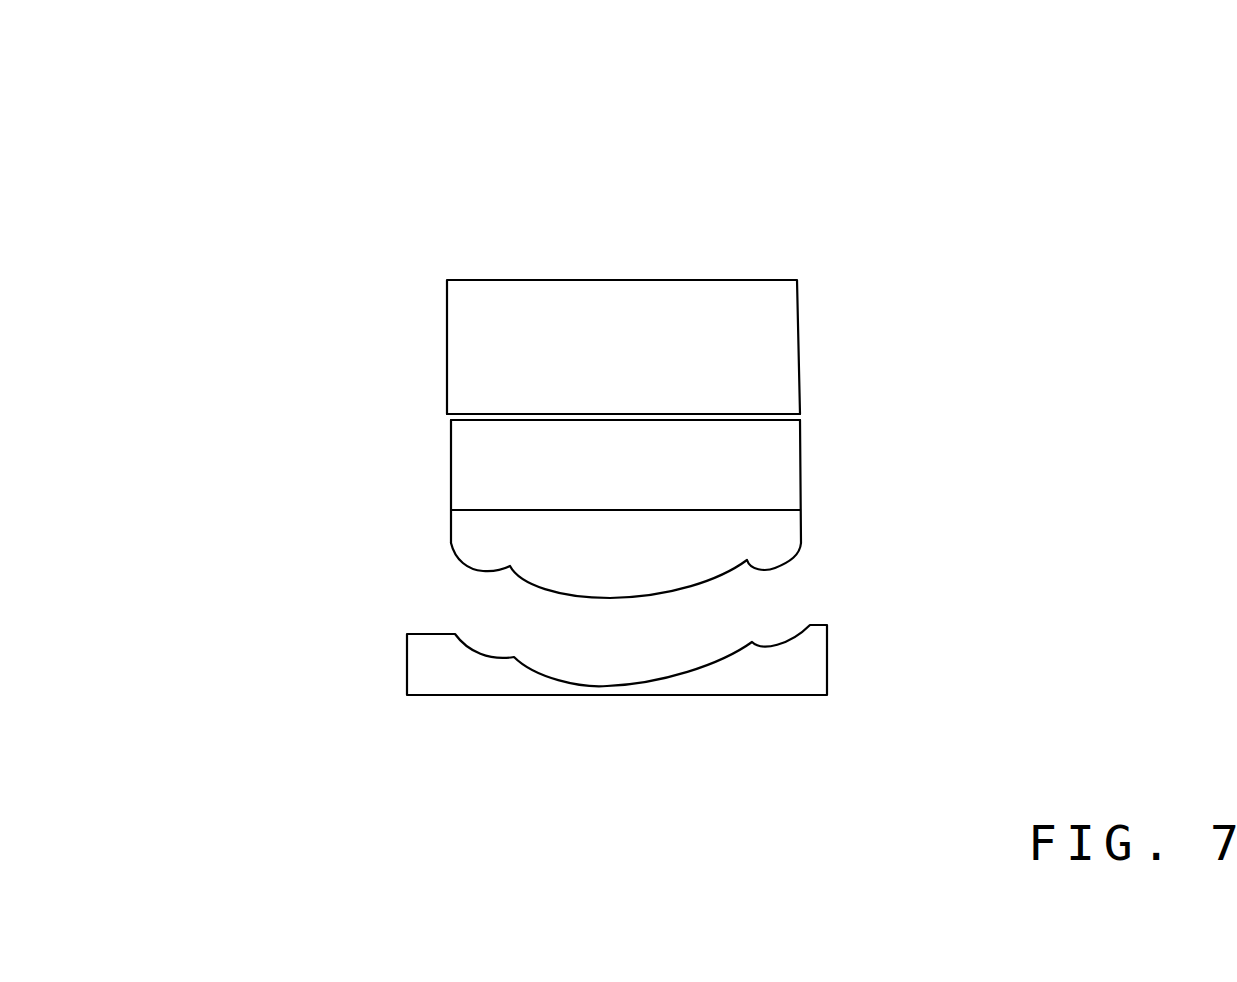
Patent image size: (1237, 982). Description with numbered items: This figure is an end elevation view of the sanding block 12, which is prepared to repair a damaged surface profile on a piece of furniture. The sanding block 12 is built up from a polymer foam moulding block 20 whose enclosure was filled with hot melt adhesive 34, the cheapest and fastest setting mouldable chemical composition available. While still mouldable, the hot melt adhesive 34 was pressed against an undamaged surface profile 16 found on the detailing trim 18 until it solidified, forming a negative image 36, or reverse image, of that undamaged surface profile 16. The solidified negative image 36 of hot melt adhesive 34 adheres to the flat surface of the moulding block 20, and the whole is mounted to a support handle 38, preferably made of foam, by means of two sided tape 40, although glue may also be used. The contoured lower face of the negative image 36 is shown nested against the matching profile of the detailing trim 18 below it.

The sanding block 12 is at (342, 235).
The undamaged surface profile 16 is at (507, 615).
The detailing trim 18 is at (828, 668).
The polymer foam moulding block 20 is at (801, 455).
The hot melt adhesive 34 is at (783, 528).
The negative image 36 is at (705, 617).
The support handle 38 is at (798, 333).
The two sided tape 40 is at (497, 412).